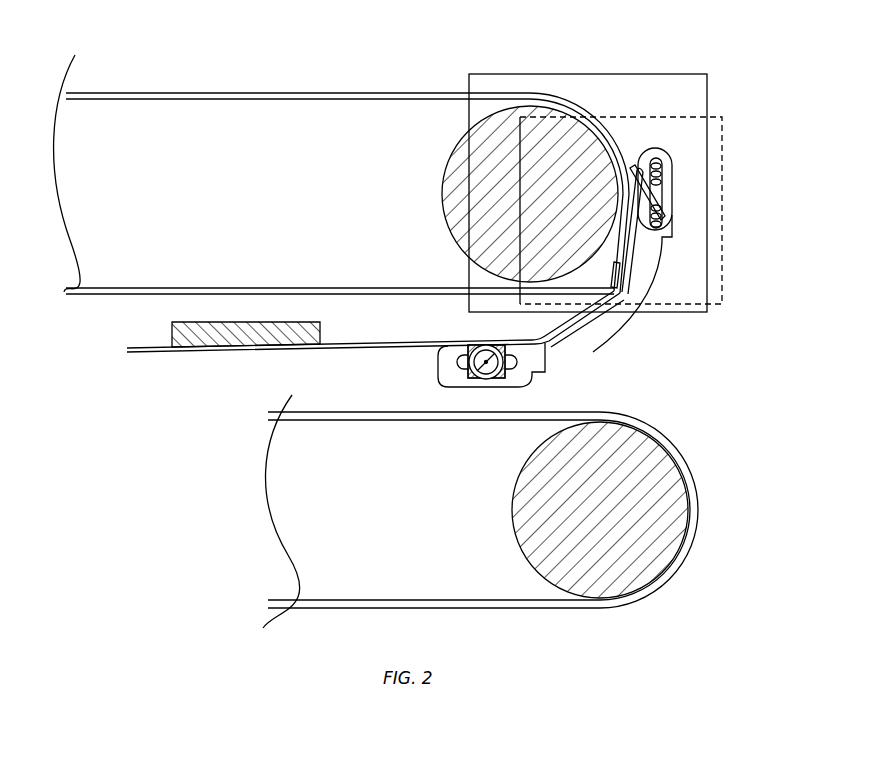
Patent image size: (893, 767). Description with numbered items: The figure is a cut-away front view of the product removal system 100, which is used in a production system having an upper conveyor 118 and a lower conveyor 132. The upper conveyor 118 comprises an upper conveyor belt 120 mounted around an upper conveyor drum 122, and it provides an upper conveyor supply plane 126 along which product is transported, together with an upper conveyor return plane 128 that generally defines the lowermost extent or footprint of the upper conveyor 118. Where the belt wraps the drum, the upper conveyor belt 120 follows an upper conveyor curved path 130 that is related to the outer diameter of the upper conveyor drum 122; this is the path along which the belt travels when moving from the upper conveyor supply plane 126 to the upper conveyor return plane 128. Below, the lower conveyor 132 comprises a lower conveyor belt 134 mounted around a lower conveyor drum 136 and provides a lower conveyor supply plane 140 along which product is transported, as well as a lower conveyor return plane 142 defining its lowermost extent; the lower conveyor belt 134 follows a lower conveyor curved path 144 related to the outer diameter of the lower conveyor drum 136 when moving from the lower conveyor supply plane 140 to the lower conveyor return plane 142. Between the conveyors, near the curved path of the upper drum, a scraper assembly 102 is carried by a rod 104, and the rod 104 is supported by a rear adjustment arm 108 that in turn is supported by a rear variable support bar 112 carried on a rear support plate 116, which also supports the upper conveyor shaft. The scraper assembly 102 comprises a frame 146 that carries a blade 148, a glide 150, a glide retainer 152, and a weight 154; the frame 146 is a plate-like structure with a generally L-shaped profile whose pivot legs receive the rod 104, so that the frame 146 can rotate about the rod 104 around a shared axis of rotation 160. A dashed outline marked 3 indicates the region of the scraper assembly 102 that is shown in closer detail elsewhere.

The product removal system 100 is at (701, 247).
The scraper assembly 102 is at (583, 327).
The rod 104 is at (494, 379).
The rear adjustment arm 108 is at (613, 326).
The rear variable support bar 112 is at (673, 183).
The rear support plate 116 is at (535, 74).
The upper conveyor 118 is at (590, 108).
The upper conveyor belt 120 is at (158, 99).
The upper conveyor drum 122 is at (443, 188).
The upper conveyor supply plane 126 is at (252, 93).
The upper conveyor return plane 128 is at (132, 296).
The upper conveyor curved path 130 is at (607, 137).
The lower conveyor 132 is at (666, 434).
The lower conveyor belt 134 is at (365, 600).
The lower conveyor drum 136 is at (512, 494).
The lower conveyor supply plane 140 is at (322, 412).
The lower conveyor return plane 142 is at (450, 608).
The lower conveyor curved path 144 is at (690, 464).
The frame 146 is at (563, 338).
The blade 148 is at (664, 203).
The glide 150 is at (630, 258).
The glide retainer 152 is at (620, 284).
The weight 154 is at (320, 325).
The axis of rotation 160 is at (478, 381).
The section view indicator 3 is at (726, 116).